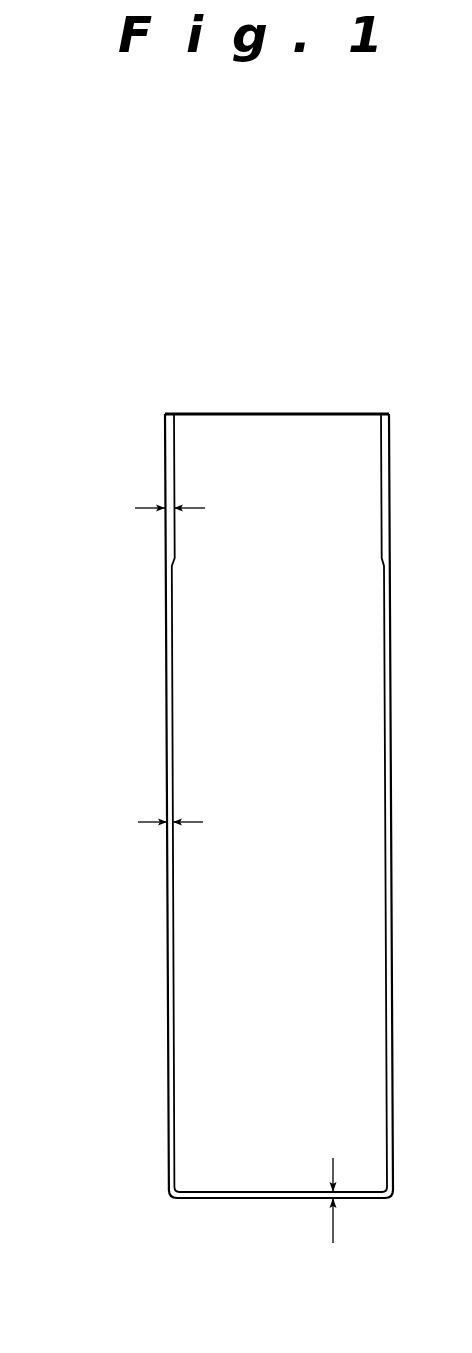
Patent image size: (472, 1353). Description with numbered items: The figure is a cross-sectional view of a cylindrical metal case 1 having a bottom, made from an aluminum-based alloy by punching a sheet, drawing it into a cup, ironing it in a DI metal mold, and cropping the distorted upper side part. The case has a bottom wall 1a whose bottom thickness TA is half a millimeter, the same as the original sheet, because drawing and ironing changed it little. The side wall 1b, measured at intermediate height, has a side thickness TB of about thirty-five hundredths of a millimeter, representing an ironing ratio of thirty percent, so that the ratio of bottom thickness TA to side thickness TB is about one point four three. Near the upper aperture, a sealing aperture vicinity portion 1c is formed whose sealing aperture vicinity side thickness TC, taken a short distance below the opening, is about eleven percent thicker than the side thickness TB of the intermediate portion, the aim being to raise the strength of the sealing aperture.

The metal case 1 is at (168, 1061).
The bottom wall 1a is at (219, 1199).
The side wall 1b is at (167, 862).
The sealing aperture vicinity portion 1c is at (165, 460).
The bottom thickness TA is at (341, 1193).
The side thickness TB is at (164, 822).
The sealing aperture vicinity side thickness TC is at (163, 514).